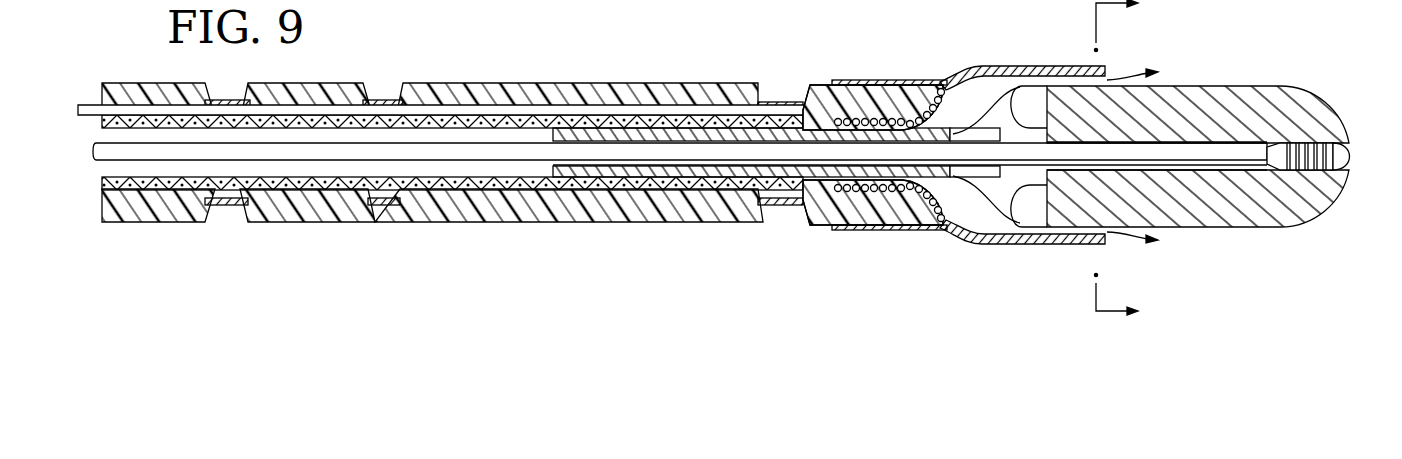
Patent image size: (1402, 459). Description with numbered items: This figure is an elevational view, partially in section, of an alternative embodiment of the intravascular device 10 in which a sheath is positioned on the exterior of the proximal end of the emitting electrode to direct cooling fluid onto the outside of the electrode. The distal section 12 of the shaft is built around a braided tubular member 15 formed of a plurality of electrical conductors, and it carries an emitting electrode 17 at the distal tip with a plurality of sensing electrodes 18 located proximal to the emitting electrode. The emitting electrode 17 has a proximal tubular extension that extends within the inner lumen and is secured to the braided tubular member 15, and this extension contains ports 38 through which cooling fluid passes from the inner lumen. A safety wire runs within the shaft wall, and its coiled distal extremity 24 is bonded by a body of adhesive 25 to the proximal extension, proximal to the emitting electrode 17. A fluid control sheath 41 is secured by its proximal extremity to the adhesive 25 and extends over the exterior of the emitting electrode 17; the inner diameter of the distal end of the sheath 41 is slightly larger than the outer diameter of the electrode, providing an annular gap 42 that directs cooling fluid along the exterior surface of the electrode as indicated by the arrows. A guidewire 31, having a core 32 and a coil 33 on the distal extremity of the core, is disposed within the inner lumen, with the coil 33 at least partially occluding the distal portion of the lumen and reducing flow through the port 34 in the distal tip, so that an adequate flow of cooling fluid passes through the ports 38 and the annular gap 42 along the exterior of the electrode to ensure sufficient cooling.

The elongated intravascular device 10 is at (1130, 164).
The distal section 12 is at (551, 83).
The braided tubular member 15 is at (507, 189).
The emitting electrode 17 is at (1204, 102).
The sensing electrodes 18 is at (381, 101).
The distal extremity of the safety wire 24 is at (860, 88).
The adhesive 25 is at (850, 230).
The guidewire 31 is at (1245, 153).
The core 32 is at (193, 153).
The coil 33 is at (1341, 162).
The port 34 is at (1343, 142).
The ports 38 is at (960, 136).
The fluid control sheath 41 is at (1026, 66).
The annular gap 42 is at (1107, 233).